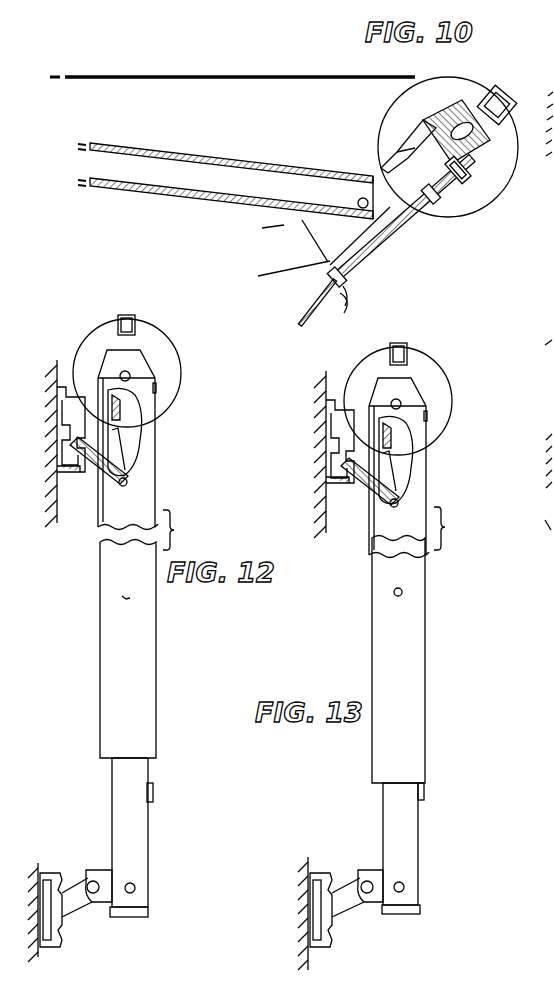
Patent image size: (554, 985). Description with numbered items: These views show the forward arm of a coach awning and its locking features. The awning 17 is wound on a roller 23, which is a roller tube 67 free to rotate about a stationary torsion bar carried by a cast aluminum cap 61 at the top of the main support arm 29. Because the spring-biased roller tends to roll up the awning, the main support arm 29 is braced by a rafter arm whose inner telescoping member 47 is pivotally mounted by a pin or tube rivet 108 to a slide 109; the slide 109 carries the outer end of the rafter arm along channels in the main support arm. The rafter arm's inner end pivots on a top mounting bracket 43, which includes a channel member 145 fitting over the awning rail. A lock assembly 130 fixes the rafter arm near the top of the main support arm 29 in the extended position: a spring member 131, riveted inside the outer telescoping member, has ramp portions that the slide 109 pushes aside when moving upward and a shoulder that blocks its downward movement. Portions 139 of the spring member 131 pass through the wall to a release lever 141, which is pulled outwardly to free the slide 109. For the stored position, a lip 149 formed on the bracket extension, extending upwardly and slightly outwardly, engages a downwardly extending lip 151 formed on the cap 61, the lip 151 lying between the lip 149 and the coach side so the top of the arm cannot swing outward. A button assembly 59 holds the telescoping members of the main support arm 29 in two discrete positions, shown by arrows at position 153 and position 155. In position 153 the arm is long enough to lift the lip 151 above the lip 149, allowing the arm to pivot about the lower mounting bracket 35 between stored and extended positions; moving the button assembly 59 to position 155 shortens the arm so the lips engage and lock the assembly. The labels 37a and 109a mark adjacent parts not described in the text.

In FIG. 10, the awning 17 is at (243, 66).
In FIG. 10, the inner telescoping member 47 is at (190, 160).
In FIG. 10, the pin or tube rivet 108 is at (358, 203).
In FIG. 10, the slide 109 is at (318, 233).
In FIG. 10, the roller 23 is at (472, 66).
In FIG. 12, the roller 23 is at (153, 337).
In FIG. 13, the roller 23 is at (413, 365).
In FIG. 10, the cap 61 is at (509, 116).
In FIG. 10, the top mounting bracket 43 is at (549, 128).
In FIG. 10, the lip 151 is at (386, 167).
In FIG. 12, the lip 151 is at (95, 415).
In FIG. 13, the lip 151 is at (390, 428).
In FIG. 10, the lock assembly 130 is at (408, 219).
In FIG. 10, the roller tube 67 is at (466, 188).
In FIG. 10, the spring member 131 is at (368, 272).
In FIG. 10, the portions 139 is at (352, 287).
In FIG. 10, the release lever 141 is at (346, 312).
In FIG. 12, the channel member 145 is at (63, 386).
In FIG. 13, the channel member 145 is at (326, 463).
In FIG. 12, the lip 149 is at (112, 447).
In FIG. 13, the lip 149 is at (375, 449).
In FIG. 12, the position 153 is at (178, 552).
In FIG. 13, the position 153 is at (400, 563).
In FIG. 12, the button assembly 59 is at (118, 563).
In FIG. 13, the button assembly 59 is at (405, 606).
In FIG. 12, the position 155 is at (130, 598).
In FIG. 13, the position 155 is at (403, 591).
In FIG. 12, the main support arm 29 is at (135, 625).
In FIG. 12, the lower mounting bracket 35 is at (68, 866).
In FIG. 13, the lower mounting bracket 35 is at (341, 862).
In FIG. 13, the frame member 37a is at (530, 347).
In FIG. 13, the guide wedge 109a is at (527, 473).